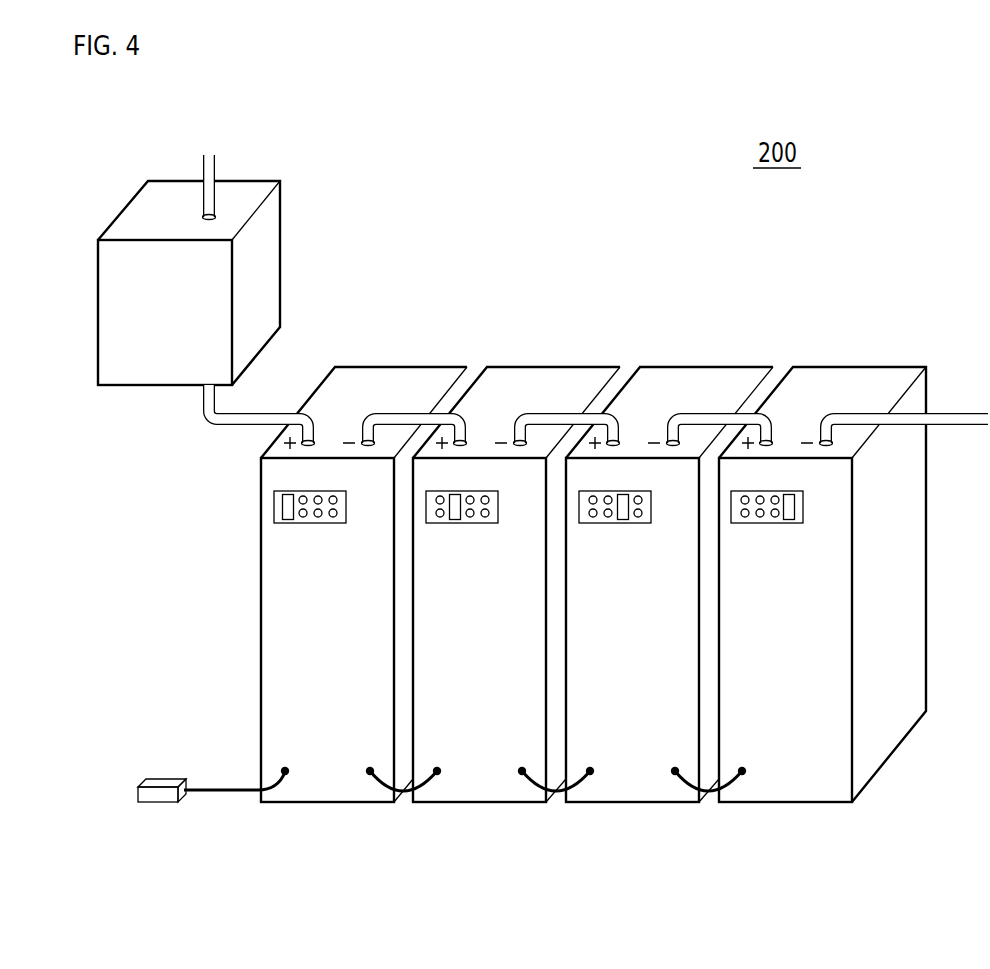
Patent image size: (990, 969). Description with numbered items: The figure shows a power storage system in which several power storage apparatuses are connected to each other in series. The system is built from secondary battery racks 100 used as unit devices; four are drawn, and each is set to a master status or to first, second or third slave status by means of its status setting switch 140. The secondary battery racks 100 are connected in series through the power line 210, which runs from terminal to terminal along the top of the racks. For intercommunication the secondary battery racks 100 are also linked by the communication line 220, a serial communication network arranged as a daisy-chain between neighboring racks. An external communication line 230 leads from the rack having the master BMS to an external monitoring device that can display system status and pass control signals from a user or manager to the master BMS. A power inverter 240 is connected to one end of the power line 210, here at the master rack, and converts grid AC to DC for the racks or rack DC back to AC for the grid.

The secondary battery rack 100 is at (377, 378).
The status setting switch 140 is at (310, 523).
The power line 210 is at (415, 413).
The communication line 220 is at (387, 791).
The external communication line 230 is at (223, 793).
The power inverter 240 is at (273, 237).